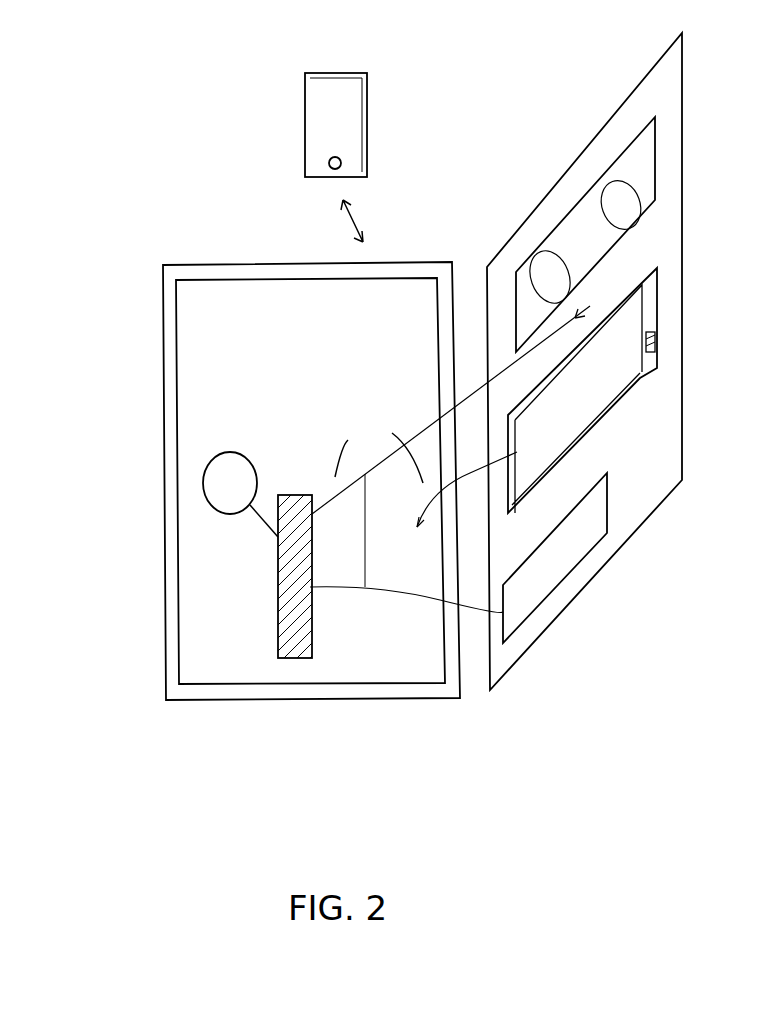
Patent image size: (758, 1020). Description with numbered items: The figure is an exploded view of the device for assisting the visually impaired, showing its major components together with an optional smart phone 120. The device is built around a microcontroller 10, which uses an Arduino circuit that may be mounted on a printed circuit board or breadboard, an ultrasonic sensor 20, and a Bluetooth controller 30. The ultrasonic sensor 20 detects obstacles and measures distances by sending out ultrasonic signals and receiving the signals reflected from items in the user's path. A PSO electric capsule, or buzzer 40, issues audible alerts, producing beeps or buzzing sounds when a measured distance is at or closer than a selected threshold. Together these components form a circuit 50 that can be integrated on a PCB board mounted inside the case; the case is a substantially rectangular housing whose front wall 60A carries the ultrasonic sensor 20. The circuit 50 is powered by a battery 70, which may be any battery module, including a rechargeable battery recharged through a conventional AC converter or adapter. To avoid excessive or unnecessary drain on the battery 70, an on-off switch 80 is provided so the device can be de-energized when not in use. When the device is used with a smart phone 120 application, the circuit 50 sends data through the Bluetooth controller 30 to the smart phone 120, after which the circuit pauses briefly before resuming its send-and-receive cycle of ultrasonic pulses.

The smart phone 120 is at (372, 92).
The front wall 60A is at (163, 412).
The buzzer 40 is at (245, 442).
The microcontroller 10 is at (271, 576).
The circuit 50 is at (372, 423).
The ultrasonic sensor 20 is at (553, 168).
The battery 70 is at (582, 390).
The on-off switch 80 is at (668, 321).
The Bluetooth controller 30 is at (624, 492).